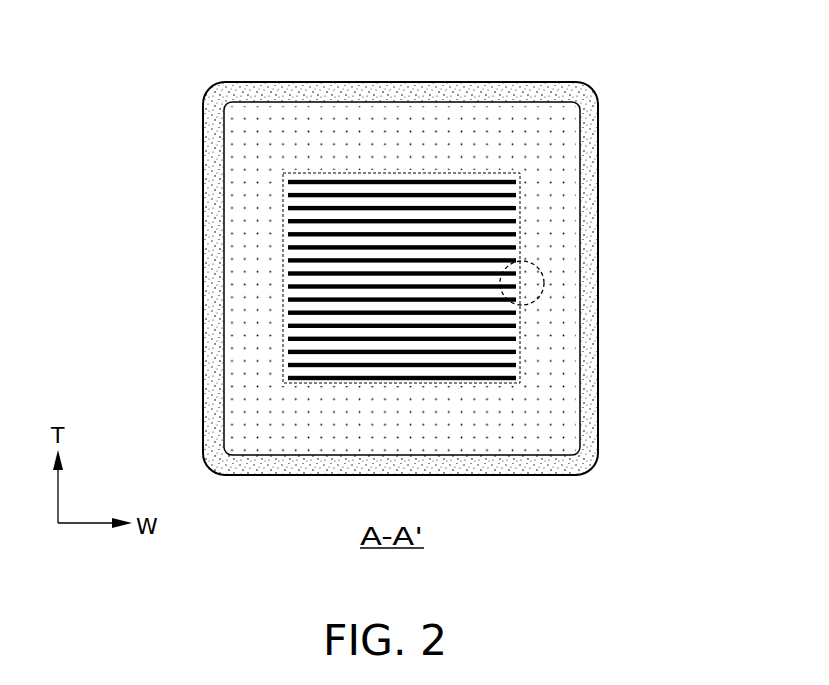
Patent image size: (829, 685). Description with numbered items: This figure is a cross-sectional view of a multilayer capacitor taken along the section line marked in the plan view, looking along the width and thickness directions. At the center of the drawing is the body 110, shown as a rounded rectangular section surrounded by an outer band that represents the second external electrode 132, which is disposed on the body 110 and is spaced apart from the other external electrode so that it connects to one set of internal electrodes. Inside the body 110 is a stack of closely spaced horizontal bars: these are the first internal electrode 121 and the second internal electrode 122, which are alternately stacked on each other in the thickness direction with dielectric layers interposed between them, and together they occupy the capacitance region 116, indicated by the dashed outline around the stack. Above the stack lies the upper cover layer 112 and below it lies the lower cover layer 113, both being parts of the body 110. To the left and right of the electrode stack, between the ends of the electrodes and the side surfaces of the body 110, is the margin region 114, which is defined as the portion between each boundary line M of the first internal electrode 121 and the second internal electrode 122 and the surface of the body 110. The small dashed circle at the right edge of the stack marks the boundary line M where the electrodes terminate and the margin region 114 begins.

The body 110 is at (516, 90).
The upper cover layer 112 is at (474, 110).
The lower cover layer 113 is at (437, 425).
The margin region 114 is at (245, 293).
The capacitance region 116 is at (403, 160).
The first internal electrode 121 is at (300, 178).
The second internal electrode 122 is at (343, 192).
The second external electrode 132 is at (592, 119).
The boundary line M is at (541, 277).